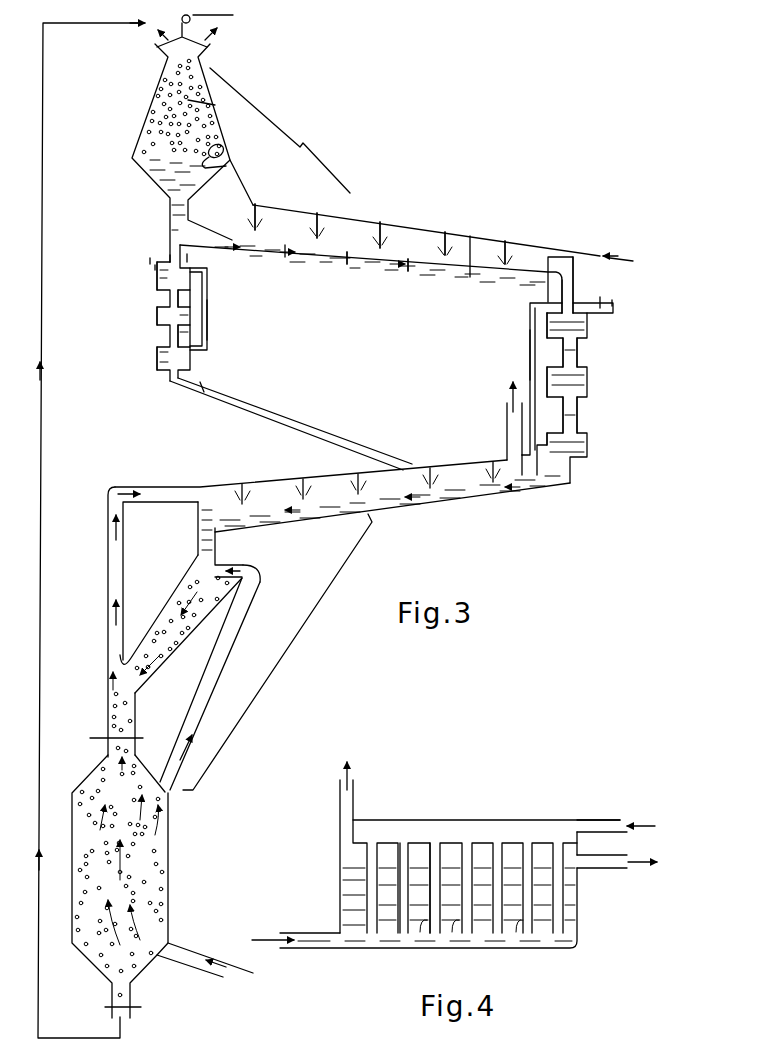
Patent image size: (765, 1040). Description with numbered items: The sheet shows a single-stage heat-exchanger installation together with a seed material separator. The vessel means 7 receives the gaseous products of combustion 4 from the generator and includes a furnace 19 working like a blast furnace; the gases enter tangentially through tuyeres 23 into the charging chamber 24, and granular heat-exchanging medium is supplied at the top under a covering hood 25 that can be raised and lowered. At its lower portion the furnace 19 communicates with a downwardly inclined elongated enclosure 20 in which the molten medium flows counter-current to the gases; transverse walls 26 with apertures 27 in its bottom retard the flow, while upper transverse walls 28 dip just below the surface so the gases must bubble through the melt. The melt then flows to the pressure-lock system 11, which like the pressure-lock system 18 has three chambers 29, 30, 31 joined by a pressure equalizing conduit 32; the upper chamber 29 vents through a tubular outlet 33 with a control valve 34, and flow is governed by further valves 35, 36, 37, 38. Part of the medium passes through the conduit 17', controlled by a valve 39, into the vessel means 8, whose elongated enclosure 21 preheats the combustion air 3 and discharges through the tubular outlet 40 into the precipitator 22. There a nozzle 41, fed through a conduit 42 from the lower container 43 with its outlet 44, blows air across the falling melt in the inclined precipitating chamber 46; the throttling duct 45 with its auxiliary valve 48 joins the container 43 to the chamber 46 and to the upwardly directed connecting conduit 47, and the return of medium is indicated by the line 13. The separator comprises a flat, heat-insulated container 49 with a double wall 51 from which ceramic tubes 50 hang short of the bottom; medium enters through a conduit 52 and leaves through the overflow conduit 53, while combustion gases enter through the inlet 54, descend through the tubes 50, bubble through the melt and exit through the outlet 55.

In FIG. 3, the preheated combustion air 3 is at (506, 400).
In FIG. 3, the gaseous products of combustion 4 is at (615, 248).
In FIG. 3, the vessel means 7 is at (320, 146).
In FIG. 3, the vessel means 8 is at (304, 676).
In FIG. 3, the pressure-lock system 11 is at (640, 374).
In FIG. 3, the return line 13 is at (40, 662).
In FIG. 3, the conduit 17' is at (291, 424).
In FIG. 3, the pressure-lock system 18 is at (121, 334).
In FIG. 3, the furnace 19 is at (149, 108).
In FIG. 3, the elongated enclosure 20 is at (375, 296).
In FIG. 3, the elongated enclosure 21 is at (307, 549).
In FIG. 3, the precipitator 22 is at (202, 824).
In FIG. 3, the tuyere 23 is at (220, 143).
In FIG. 3, the charging chamber 24 is at (198, 110).
In FIG. 3, the covering hood 25 is at (172, 34).
In FIG. 3, the transverse wall 26 is at (412, 248).
In FIG. 3, the aperture 27 is at (345, 258).
In FIG. 3, the transverse wall 28 is at (383, 224).
In FIG. 3, the upper chamber 29 is at (158, 281).
In FIG. 3, the chamber 30 is at (158, 316).
In FIG. 3, the chamber 31 is at (158, 360).
In FIG. 3, the pressure equalizing conduit 32 is at (209, 327).
In FIG. 3, the tubular outlet 33 is at (155, 268).
In FIG. 3, the control valve 34 is at (150, 240).
In FIG. 3, the valve 35 is at (168, 259).
In FIG. 3, the valve 36 is at (205, 288).
In FIG. 3, the valve 37 is at (176, 300).
In FIG. 3, the valve 38 is at (176, 336).
In FIG. 3, the valve 39 is at (203, 386).
In FIG. 3, the tubular outlet 40 is at (198, 537).
In FIG. 3, the nozzle 41 is at (223, 568).
In FIG. 3, the conduit 42 is at (206, 683).
In FIG. 3, the lower container 43 is at (168, 865).
In FIG. 3, the outlet 44 is at (136, 1006).
In FIG. 3, the throttling duct 45 is at (137, 712).
In FIG. 3, the precipitating chamber 46 is at (176, 596).
In FIG. 3, the connecting conduit 47 is at (108, 575).
In FIG. 3, the auxiliary valve 48 is at (104, 739).
In FIG. 4, the container 49 is at (417, 948).
In FIG. 4, the ceramic tube 50 is at (435, 848).
In FIG. 4, the double wall 51 is at (517, 843).
In FIG. 4, the conduit 52 is at (314, 932).
In FIG. 4, the overflow conduit 53 is at (600, 872).
In FIG. 4, the inlet 54 is at (625, 820).
In FIG. 4, the outlet 55 is at (340, 800).